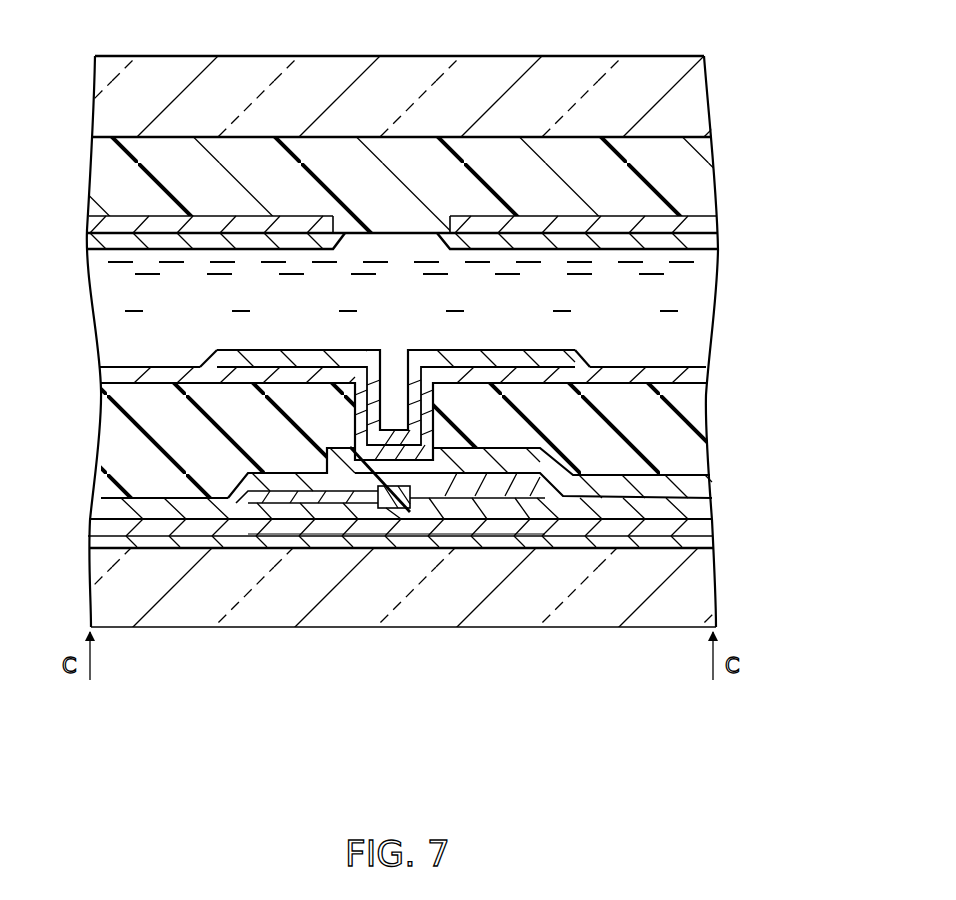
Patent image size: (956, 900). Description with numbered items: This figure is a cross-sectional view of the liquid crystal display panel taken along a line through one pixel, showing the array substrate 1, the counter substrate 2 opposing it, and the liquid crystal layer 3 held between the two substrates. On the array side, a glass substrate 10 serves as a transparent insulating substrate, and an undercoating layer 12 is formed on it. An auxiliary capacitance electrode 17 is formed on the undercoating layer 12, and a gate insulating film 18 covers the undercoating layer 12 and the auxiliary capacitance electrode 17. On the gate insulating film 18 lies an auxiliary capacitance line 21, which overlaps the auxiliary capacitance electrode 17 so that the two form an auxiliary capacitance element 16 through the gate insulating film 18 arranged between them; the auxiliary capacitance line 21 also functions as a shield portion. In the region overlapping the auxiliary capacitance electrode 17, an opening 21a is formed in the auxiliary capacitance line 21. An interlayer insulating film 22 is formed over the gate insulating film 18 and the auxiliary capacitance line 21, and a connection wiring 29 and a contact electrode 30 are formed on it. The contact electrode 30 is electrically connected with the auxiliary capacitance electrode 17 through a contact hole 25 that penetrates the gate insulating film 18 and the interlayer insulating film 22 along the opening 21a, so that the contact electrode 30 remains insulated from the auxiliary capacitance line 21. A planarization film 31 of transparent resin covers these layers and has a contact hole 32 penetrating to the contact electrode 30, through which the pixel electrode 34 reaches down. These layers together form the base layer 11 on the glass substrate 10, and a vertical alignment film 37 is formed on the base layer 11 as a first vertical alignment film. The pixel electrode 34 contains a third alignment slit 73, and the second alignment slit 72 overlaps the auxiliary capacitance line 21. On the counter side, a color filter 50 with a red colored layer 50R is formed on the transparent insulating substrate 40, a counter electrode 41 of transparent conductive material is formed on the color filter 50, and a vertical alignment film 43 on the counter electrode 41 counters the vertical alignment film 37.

The array substrate 1 is at (58, 606).
The counter substrate 2 is at (743, 126).
The liquid crystal layer 3 is at (697, 305).
The glass substrate 10 is at (698, 607).
The base layer 11 is at (82, 367).
The undercoating layer 12 is at (704, 549).
The auxiliary capacitance element 16 is at (213, 704).
The auxiliary capacitance electrode 17 is at (288, 523).
The gate insulating film 18 is at (710, 531).
The auxiliary capacitance line 21 is at (470, 500).
The opening 21a is at (366, 514).
The interlayer insulating film 22 is at (710, 501).
The contact hole 25 is at (405, 482).
The connection wiring 29 is at (710, 477).
The contact electrode 30 is at (349, 460).
The planarization film 31 is at (698, 417).
The contact hole 32 is at (423, 400).
The pixel electrode 34 is at (499, 372).
The vertical alignment film 37 is at (707, 377).
The transparent insulating substrate 40 is at (692, 92).
The counter electrode 41 is at (715, 228).
The vertical alignment film 43 is at (714, 242).
The color filter 50 is at (714, 164).
The red colored layer 50R is at (706, 188).
The second alignment slit 72 is at (342, 224).
The third alignment slit 73 is at (207, 362).